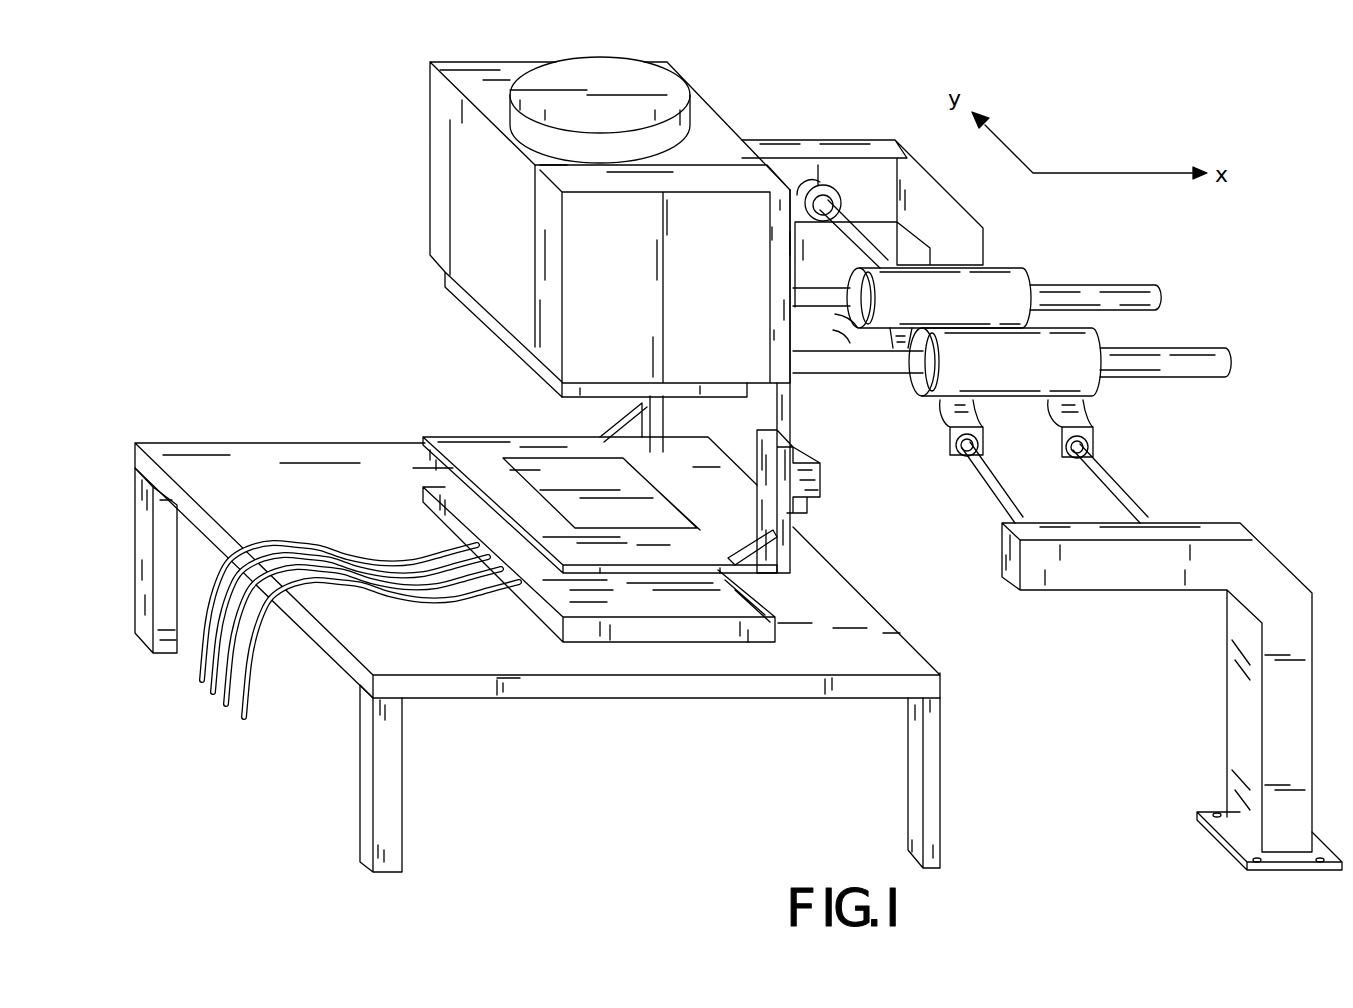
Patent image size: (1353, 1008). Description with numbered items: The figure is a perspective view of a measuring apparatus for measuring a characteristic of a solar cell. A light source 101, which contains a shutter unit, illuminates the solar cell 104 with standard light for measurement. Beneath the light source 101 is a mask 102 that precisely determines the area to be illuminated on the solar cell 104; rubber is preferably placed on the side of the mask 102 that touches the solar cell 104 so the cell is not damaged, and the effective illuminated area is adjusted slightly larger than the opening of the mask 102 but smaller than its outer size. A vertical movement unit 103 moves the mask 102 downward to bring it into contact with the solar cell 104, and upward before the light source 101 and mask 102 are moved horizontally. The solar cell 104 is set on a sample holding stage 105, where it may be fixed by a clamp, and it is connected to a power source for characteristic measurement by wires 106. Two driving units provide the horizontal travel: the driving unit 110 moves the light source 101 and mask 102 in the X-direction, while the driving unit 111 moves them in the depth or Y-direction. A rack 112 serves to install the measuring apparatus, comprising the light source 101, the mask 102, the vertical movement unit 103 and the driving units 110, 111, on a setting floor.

The light source 101 is at (437, 165).
The mask 102 is at (520, 433).
The vertical movement unit 103 is at (822, 488).
The solar cell 104 is at (717, 600).
The sample holding stage 105 is at (590, 687).
The wires 106 is at (360, 637).
The driving unit 110 is at (1013, 287).
The driving unit 111 is at (1093, 430).
The rack 112 is at (1143, 578).